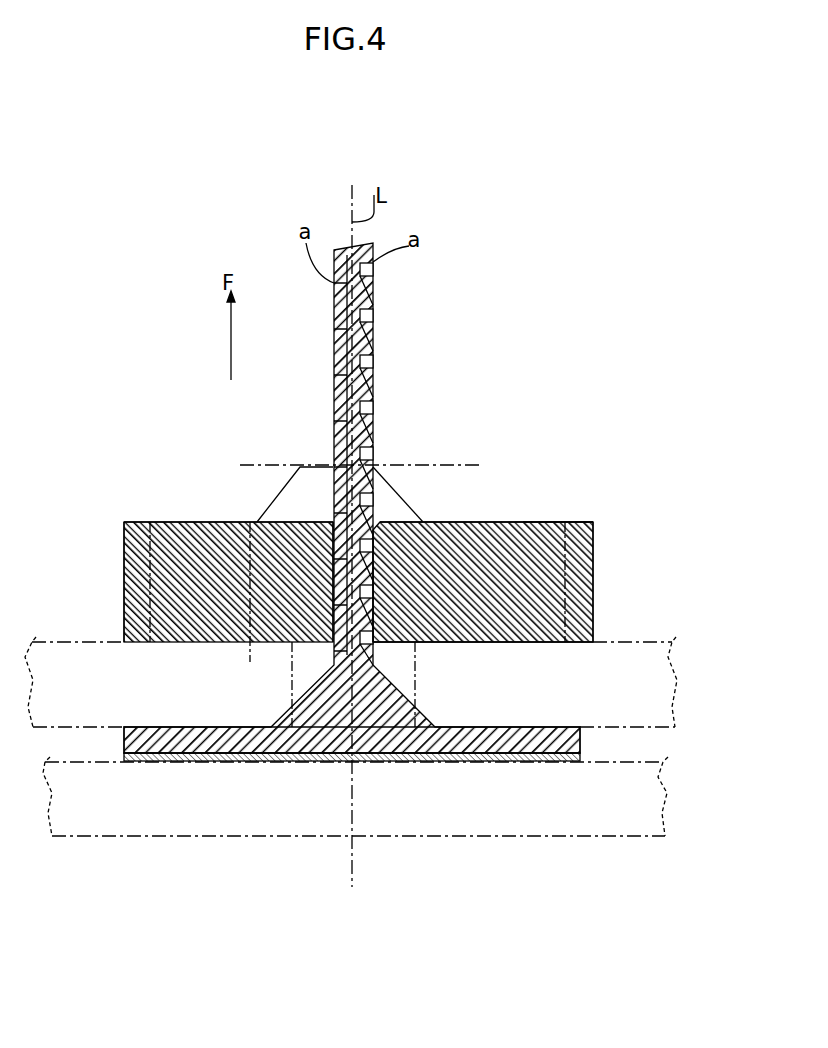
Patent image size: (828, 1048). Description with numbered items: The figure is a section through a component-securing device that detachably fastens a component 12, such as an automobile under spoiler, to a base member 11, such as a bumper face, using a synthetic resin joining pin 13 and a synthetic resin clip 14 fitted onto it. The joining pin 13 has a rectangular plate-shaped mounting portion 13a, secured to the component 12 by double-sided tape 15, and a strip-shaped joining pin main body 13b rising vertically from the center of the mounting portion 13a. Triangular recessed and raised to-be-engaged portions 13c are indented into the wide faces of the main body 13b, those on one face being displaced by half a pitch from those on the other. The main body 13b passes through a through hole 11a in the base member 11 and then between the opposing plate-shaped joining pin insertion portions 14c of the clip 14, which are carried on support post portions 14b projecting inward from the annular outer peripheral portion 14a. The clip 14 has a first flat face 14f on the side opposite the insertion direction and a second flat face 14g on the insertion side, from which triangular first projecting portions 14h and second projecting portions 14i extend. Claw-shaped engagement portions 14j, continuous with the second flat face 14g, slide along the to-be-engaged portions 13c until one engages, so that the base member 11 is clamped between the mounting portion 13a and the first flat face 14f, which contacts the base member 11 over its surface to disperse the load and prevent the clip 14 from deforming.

The base member 11 is at (627, 630).
The through hole 11a is at (400, 690).
The component 12 is at (452, 838).
The joining pin 13 is at (417, 319).
The mounting portion 13a is at (236, 735).
The joining pin main body 13b is at (334, 421).
The to-be-engaged portions 13c is at (334, 375).
The clip 14 is at (557, 514).
The outer peripheral portion 14a is at (123, 578).
The support post portions 14b is at (201, 537).
The joining pin insertion portion 14c is at (477, 642).
The first flat face 14f is at (540, 644).
The second flat face 14g is at (523, 520).
The first projecting portions 14h is at (383, 483).
The second projecting portions 14i is at (270, 465).
The engagement portions 14j is at (335, 503).
The double-sided tape 15 is at (308, 762).